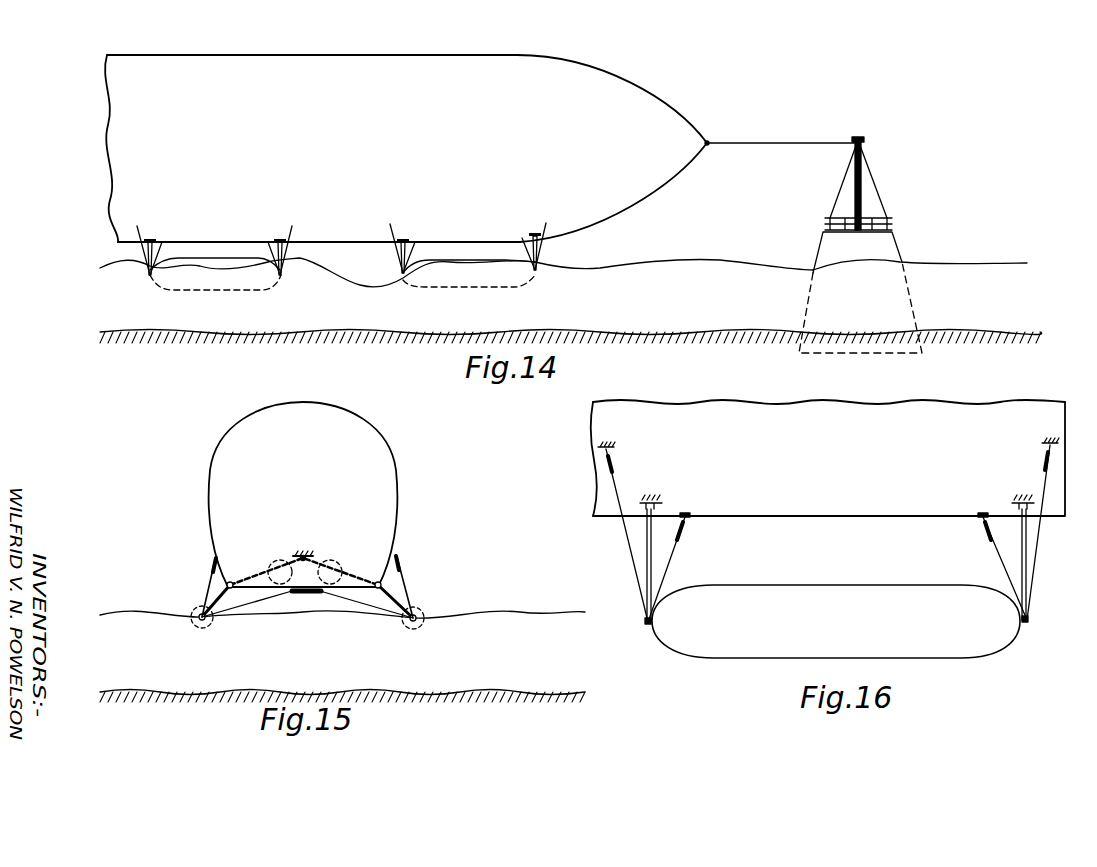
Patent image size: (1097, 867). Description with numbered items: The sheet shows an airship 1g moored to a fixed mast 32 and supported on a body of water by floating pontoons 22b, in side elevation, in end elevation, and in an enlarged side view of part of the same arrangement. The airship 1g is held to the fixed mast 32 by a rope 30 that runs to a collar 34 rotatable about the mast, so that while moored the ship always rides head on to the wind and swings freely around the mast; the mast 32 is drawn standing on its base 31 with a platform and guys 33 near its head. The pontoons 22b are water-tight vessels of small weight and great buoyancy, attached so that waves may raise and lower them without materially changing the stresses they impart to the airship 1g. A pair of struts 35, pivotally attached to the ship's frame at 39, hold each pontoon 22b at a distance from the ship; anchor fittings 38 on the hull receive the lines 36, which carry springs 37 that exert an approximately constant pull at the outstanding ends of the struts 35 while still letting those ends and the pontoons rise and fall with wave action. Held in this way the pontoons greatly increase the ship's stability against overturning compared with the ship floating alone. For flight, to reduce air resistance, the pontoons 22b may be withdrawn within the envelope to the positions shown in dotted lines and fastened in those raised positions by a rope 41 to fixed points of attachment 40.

In FIG. 14, the air ship 1g is at (406, 148).
In FIG. 15, the air ship 1g is at (303, 494).
In FIG. 16, the air ship 1g is at (828, 458).
In FIG. 14, the floating pontoon 22b is at (481, 294).
In FIG. 15, the floating pontoon 22b is at (435, 628).
In FIG. 16, the floating pontoon 22b is at (836, 621).
In FIG. 14, the rope 30 is at (745, 143).
In FIG. 14, the mooring mast base 31 is at (900, 246).
In FIG. 14, the fixed mast 32 is at (862, 187).
In FIG. 14, the mast platform and guys 33 is at (880, 212).
In FIG. 14, the collar 34 is at (865, 140).
In FIG. 14, the strut 35 is at (542, 264).
In FIG. 15, the strut 35 is at (392, 596).
In FIG. 16, the strut 35 is at (652, 524).
In FIG. 14, the line 36 is at (521, 244).
In FIG. 15, the line 36 is at (207, 583).
In FIG. 16, the line 36 is at (630, 550).
In FIG. 15, the spring 37 is at (400, 557).
In FIG. 16, the spring 37 is at (616, 463).
In FIG. 16, the anchor fitting 38 is at (612, 446).
In FIG. 16, the pivotal attachment point 39 is at (655, 501).
In FIG. 15, the fixed point of attachment 40 is at (306, 553).
In FIG. 15, the rope 41 is at (293, 557).